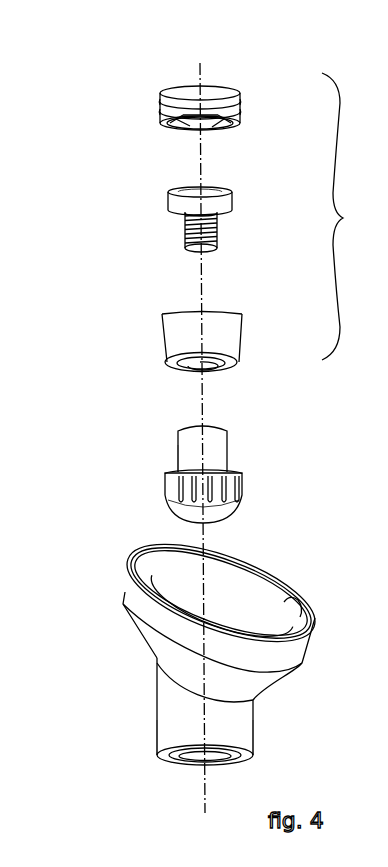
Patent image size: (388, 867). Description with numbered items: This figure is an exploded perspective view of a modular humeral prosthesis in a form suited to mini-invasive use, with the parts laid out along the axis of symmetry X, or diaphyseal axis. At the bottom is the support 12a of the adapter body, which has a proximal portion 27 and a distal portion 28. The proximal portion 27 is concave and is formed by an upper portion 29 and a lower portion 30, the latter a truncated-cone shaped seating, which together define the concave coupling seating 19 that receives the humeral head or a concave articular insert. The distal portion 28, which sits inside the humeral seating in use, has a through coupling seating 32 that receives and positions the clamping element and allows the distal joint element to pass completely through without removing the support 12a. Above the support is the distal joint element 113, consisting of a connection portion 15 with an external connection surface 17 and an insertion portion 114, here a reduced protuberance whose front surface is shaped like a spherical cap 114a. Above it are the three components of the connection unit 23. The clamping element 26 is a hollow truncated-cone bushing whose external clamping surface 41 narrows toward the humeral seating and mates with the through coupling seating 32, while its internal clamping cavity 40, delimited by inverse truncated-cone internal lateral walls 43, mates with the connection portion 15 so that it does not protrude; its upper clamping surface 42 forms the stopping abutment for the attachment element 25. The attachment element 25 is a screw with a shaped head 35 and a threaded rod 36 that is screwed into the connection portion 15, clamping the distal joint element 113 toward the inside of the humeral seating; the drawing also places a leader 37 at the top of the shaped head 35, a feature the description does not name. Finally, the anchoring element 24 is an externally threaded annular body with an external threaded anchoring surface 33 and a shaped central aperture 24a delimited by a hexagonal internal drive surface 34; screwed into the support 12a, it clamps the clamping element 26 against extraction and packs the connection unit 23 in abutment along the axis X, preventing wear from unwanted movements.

The axis of symmetry X is at (203, 76).
The anchoring element 24 is at (190, 110).
The external threaded anchoring surface 33 is at (237, 110).
The internal drive surface 34 is at (210, 131).
The shaped central aperture 24a is at (190, 133).
The attachment element 25 is at (181, 213).
The shaped head 35 is at (233, 202).
The head top surface 37 is at (178, 187).
The threaded rod 36 is at (213, 229).
The connection unit 23 is at (348, 216).
The clamping element 26 is at (187, 344).
The upper clamping surface 42 is at (228, 310).
The external clamping surface 41 is at (228, 340).
The internal clamping cavity 40 is at (193, 374).
The internal lateral walls 43 is at (212, 372).
The distal joint element 113 is at (227, 471).
The external connection surface 17 is at (217, 458).
The connection portion 15 is at (178, 452).
The insertion portion 114 is at (245, 512).
The spherical cap front surface 114a is at (217, 517).
The proximal portion 27 is at (208, 656).
The upper portion 29 is at (130, 573).
The coupling seating 19 is at (297, 595).
The lower portion 30 is at (160, 643).
The support 12a is at (140, 707).
The distal portion 28 is at (158, 738).
The through coupling seating 32 is at (227, 765).